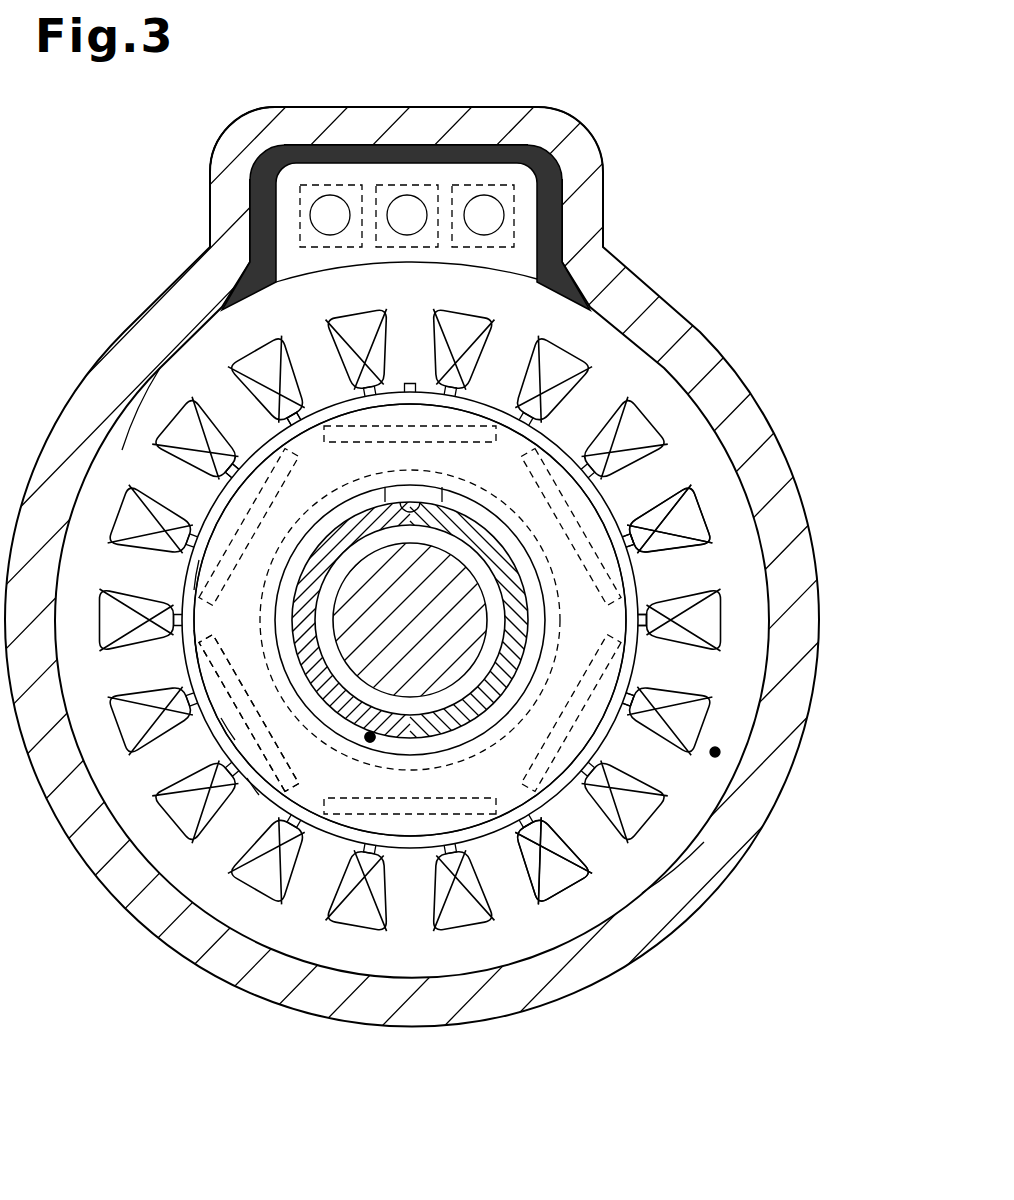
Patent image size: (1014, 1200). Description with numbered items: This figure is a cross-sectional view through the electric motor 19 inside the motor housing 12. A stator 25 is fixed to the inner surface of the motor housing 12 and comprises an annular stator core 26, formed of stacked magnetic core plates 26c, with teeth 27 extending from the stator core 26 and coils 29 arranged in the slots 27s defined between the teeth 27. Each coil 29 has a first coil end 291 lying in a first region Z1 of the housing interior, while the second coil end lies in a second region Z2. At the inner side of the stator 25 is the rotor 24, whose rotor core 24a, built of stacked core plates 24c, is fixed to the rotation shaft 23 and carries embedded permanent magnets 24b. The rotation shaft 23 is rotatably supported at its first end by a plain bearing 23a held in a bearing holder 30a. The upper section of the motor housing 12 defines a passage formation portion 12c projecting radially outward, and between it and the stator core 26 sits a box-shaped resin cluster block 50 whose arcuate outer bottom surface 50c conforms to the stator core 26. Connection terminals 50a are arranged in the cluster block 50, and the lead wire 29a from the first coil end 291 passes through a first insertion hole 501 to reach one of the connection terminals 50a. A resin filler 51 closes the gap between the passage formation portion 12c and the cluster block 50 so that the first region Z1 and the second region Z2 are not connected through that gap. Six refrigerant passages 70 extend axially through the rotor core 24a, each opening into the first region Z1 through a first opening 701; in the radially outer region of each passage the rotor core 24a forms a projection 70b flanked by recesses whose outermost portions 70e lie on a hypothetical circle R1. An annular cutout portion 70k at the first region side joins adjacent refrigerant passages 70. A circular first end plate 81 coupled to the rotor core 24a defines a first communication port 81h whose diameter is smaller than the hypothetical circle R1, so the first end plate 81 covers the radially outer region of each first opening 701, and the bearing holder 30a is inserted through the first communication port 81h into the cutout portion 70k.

The motor housing 12 is at (792, 702).
The passage formation portion 12c is at (296, 112).
The electric motor 19 is at (205, 918).
The rotation shaft 23 is at (368, 737).
The plain bearing 23a is at (207, 588).
The rotor 24 is at (410, 620).
The rotor core 24a is at (418, 742).
The permanent magnets 24b is at (475, 420).
The core plates 24c is at (590, 500).
The stator 25 is at (141, 409).
The stator core 26 is at (742, 822).
The core plates 26c is at (698, 848).
The teeth 27 is at (198, 613).
The slots 27s is at (577, 852).
The coils 29 is at (562, 870).
The first coil end 291 is at (546, 856).
The lead wire 29a is at (393, 258).
The bearing holder 30a is at (207, 650).
The cluster block 50 is at (556, 118).
The connection terminals 50a is at (407, 185).
The outer bottom surface 50c is at (563, 240).
The first insertion hole 501 is at (322, 200).
The resin filler 51 is at (268, 148).
The refrigerant passages 70 is at (468, 612).
The projection 70b is at (350, 548).
The outermost portion 70e is at (240, 466).
The cutout portion 70k is at (410, 615).
The first opening 701 is at (320, 400).
The first end plate 81 is at (250, 795).
The first communication port 81h is at (230, 735).
The hypothetical circle R1 is at (672, 522).
The first region Z1 is at (718, 753).
The second region Z2 is at (370, 737).